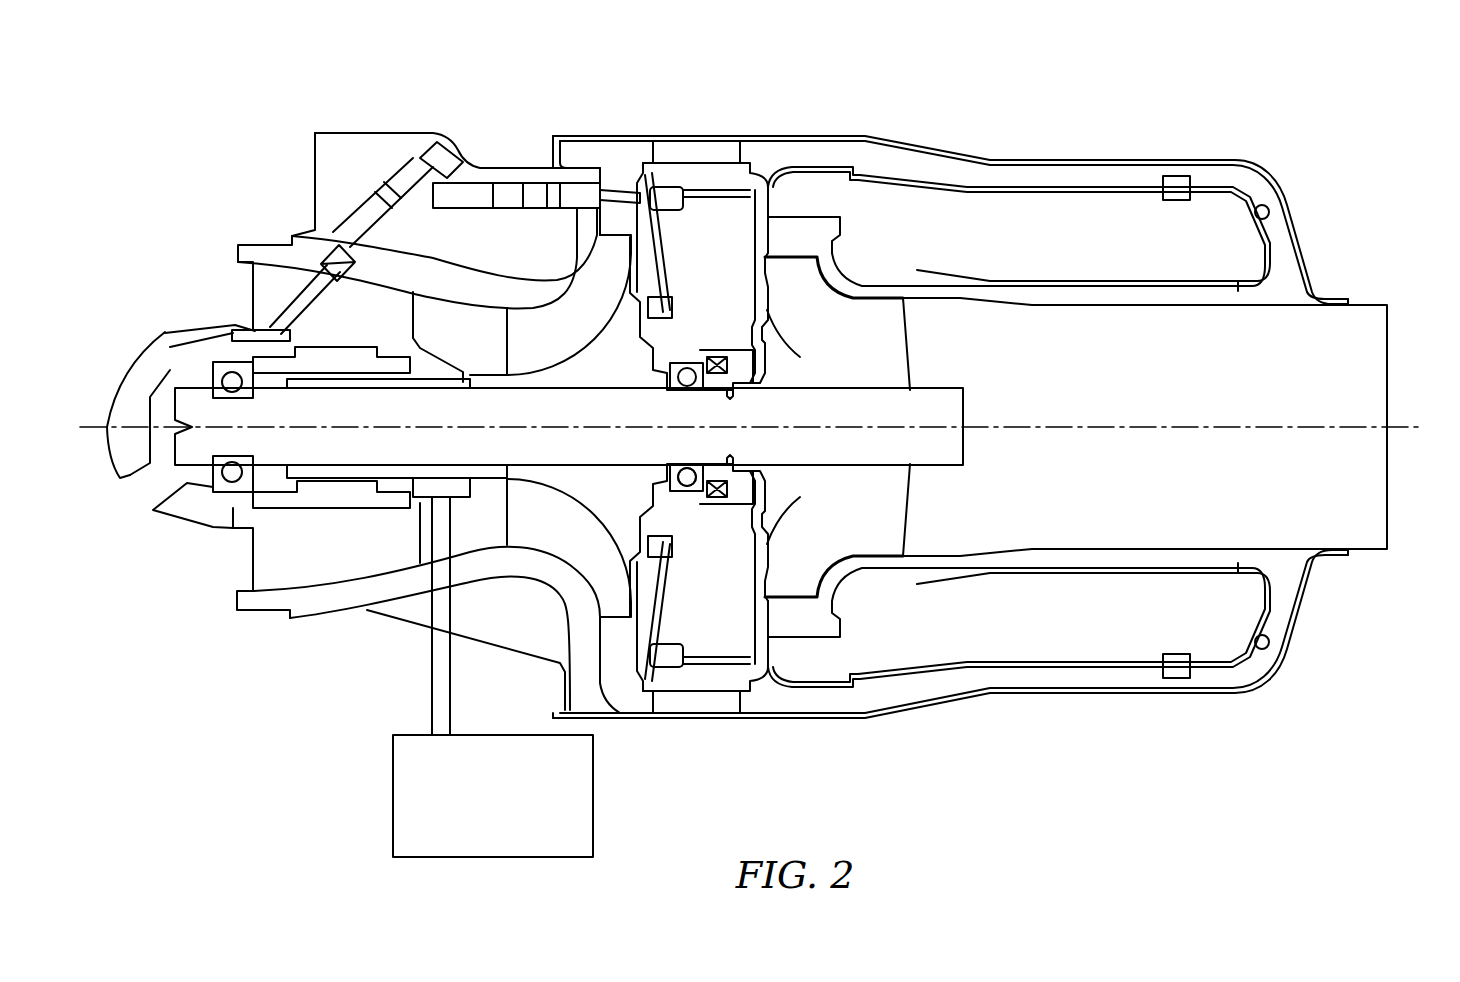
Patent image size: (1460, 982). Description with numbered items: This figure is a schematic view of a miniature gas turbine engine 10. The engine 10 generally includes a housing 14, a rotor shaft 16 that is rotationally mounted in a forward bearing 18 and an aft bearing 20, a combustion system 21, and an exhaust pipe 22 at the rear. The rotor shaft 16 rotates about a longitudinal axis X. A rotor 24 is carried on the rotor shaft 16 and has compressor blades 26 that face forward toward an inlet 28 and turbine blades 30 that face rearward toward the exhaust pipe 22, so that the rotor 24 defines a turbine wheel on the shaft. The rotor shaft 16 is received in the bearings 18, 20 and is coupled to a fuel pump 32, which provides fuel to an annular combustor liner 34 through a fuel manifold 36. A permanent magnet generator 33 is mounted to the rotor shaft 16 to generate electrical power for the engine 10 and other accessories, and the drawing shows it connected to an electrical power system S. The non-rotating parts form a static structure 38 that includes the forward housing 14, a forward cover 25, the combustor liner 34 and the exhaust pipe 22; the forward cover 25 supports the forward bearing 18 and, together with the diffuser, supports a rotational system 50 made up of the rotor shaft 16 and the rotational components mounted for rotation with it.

The miniature gas turbine engine 10 is at (1287, 113).
The housing 14 is at (315, 613).
The rotor shaft 16 is at (498, 443).
The forward bearing 18 is at (222, 495).
The aft bearing 20 is at (681, 388).
The combustion system 21 is at (1158, 158).
The exhaust pipe 22 is at (1371, 299).
The rotor 24 is at (538, 520).
The forward cover 25 is at (124, 392).
The compressor blades 26 is at (605, 502).
The inlet 28 is at (251, 577).
The turbine blades 30 is at (907, 390).
The fuel pump 32 is at (317, 328).
The permanent magnet generator 33 is at (318, 500).
The annular combustor liner 34 is at (1050, 233).
The fuel manifold 36 is at (1183, 178).
The static structure 38 is at (918, 705).
The rotational system 50 is at (557, 350).
The electrical power system S is at (595, 818).
The longitudinal axis X is at (1420, 427).